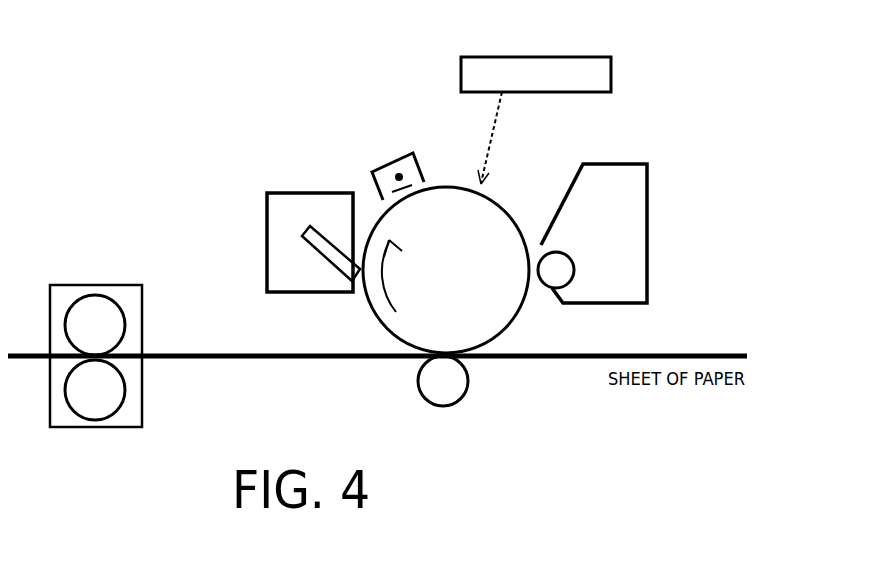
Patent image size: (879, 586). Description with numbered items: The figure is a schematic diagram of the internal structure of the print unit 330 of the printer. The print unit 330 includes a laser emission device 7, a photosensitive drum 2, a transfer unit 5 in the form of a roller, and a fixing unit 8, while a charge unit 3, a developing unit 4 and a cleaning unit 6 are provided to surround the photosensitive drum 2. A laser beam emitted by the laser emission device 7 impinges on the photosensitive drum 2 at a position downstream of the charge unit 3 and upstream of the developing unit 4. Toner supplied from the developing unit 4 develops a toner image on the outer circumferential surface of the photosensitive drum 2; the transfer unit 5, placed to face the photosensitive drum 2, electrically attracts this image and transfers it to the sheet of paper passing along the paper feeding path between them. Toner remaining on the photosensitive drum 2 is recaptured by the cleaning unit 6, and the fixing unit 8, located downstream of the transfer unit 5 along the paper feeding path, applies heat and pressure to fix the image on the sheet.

The print unit 330 is at (240, 68).
The photosensitive drum 2 is at (512, 325).
The charge unit 3 is at (393, 170).
The developing unit 4 is at (648, 190).
The transfer unit 5 is at (445, 407).
The cleaning unit 6 is at (291, 194).
The laser emission device 7 is at (531, 57).
The fixing unit 8 is at (92, 286).